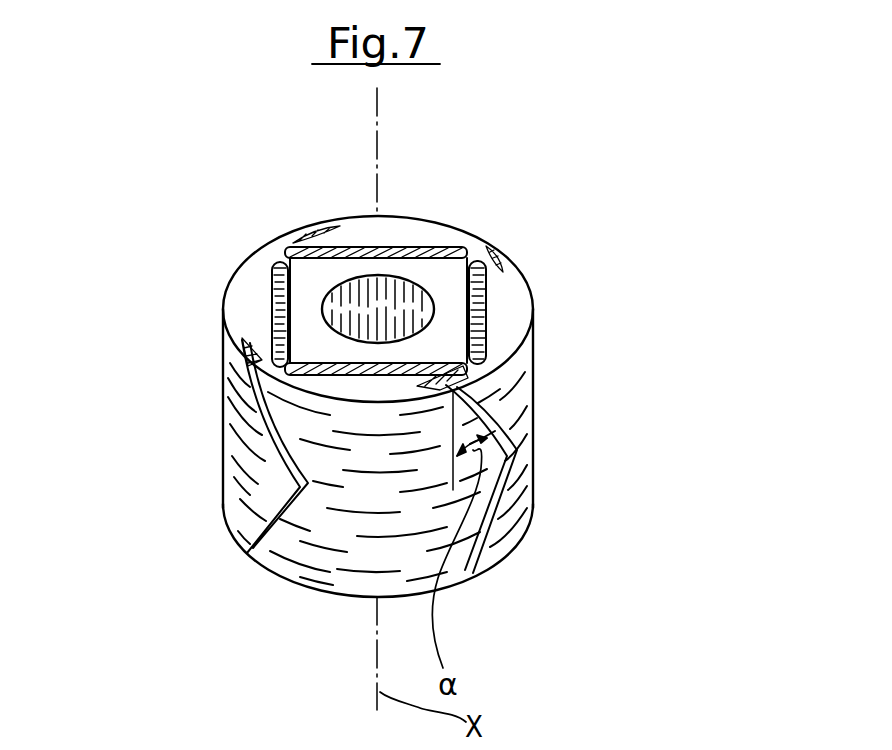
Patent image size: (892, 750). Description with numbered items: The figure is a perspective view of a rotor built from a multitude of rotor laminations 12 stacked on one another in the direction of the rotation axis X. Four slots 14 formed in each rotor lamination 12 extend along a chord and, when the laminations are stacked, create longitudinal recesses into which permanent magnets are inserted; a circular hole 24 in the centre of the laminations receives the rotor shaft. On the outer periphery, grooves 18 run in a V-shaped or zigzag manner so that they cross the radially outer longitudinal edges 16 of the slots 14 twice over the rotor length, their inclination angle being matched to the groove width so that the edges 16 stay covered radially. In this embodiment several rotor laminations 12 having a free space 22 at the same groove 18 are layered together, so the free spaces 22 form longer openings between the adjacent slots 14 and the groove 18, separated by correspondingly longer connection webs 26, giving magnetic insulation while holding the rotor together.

The rotor lamination 12 is at (527, 518).
The slot 14 is at (350, 246).
The longitudinal edge 16 is at (483, 390).
The groove 18 is at (290, 224).
The free space 22 is at (487, 293).
The circular hole 24 is at (418, 282).
The connection web 26 is at (483, 273).